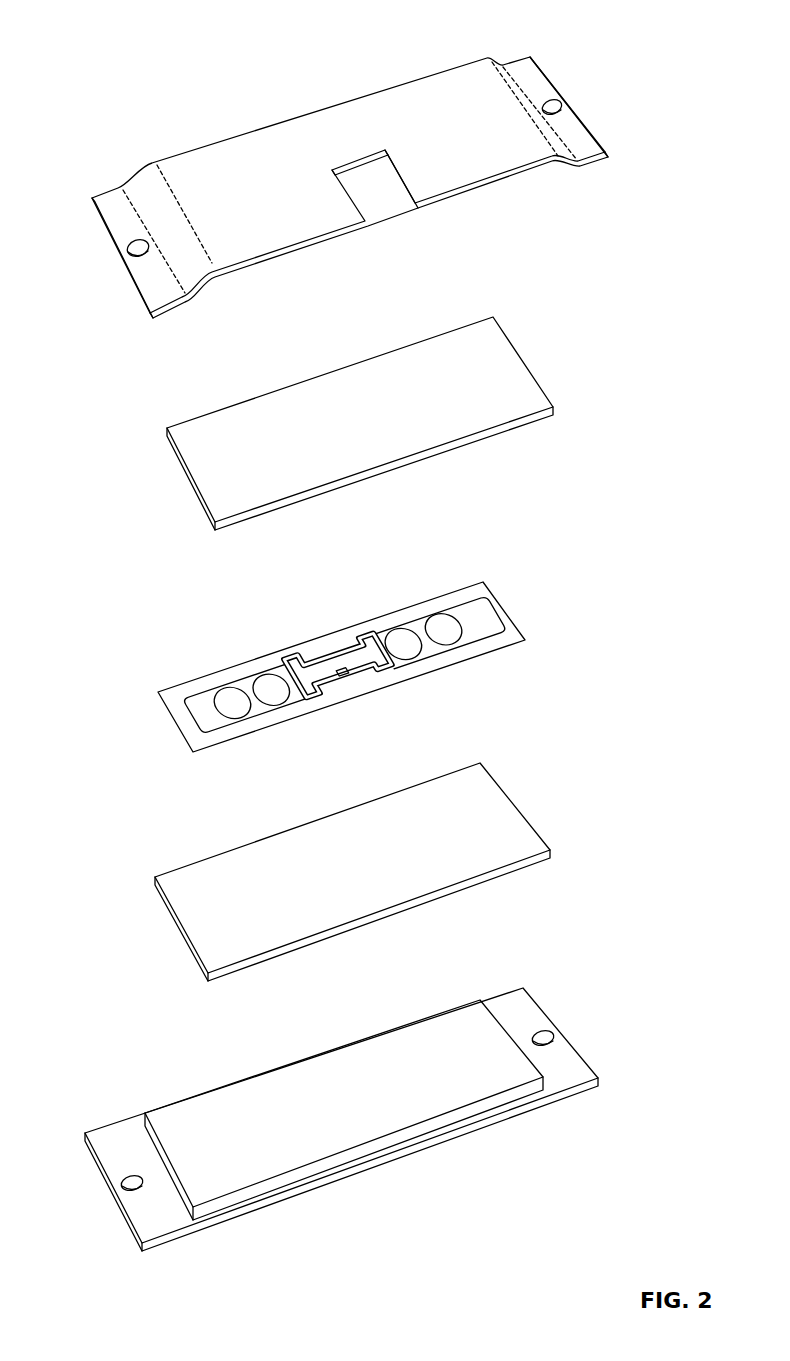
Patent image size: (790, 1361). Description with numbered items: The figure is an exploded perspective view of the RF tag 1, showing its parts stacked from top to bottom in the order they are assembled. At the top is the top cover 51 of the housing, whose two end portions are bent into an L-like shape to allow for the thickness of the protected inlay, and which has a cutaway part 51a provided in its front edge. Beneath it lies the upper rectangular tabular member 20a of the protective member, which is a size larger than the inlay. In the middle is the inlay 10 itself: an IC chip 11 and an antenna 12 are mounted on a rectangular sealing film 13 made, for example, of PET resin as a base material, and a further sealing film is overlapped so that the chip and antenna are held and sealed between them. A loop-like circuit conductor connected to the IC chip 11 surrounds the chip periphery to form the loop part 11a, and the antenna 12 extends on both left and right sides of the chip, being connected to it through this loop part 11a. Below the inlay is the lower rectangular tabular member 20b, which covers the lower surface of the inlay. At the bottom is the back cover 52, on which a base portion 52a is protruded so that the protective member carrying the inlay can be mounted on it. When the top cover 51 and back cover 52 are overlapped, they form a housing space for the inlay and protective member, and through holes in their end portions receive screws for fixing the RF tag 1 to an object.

The RF tag 1 is at (292, 81).
The top cover 51 is at (350, 187).
The cutaway part 51a is at (375, 188).
The rectangular tabular member 20a is at (327, 400).
The inlay 10 is at (315, 643).
The sealing film 13 is at (495, 610).
The antenna 12 is at (250, 687).
The IC chip 11 is at (342, 665).
The loop part 11a is at (333, 655).
The rectangular tabular member 20b is at (190, 887).
The back cover 52 is at (341, 1125).
The base portion 52a is at (323, 1088).